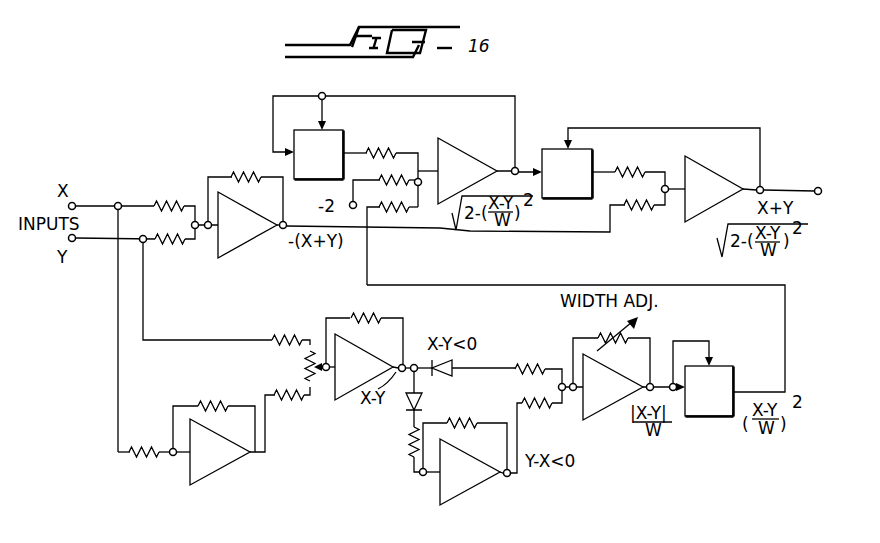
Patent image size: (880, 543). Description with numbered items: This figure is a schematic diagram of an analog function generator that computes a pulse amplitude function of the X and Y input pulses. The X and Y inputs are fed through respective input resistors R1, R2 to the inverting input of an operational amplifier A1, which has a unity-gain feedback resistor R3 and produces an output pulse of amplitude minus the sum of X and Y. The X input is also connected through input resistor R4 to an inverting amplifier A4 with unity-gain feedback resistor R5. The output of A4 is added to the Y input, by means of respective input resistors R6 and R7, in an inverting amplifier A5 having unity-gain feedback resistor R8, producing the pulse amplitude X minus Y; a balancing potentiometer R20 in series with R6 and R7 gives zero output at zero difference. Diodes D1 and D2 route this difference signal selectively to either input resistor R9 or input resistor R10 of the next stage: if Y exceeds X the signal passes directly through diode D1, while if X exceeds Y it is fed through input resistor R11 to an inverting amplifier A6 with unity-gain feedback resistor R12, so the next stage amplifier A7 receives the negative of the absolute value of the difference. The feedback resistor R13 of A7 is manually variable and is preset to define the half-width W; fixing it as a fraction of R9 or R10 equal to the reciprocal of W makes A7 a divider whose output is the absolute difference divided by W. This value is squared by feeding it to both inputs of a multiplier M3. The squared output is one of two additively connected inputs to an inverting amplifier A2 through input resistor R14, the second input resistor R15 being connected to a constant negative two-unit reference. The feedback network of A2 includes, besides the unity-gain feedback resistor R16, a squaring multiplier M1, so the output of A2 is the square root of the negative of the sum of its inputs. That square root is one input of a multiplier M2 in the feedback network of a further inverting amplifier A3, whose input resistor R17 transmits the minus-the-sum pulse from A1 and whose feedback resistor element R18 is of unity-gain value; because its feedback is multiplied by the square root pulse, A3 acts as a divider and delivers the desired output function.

The input resistor R1 is at (174, 201).
The input resistor R2 is at (175, 251).
The unity-gain feedback resistor R3 is at (245, 187).
The operational amplifier A1 is at (247, 225).
The squaring multiplier M1 is at (319, 155).
The unity-gain feedback resistor R16 is at (392, 168).
The second input resistor R15 is at (385, 182).
The input resistor R14 is at (392, 243).
The inverting amplifier A2 is at (467, 171).
The multiplier M2 is at (567, 174).
The resistor element R18 is at (640, 165).
The input resistor R17 is at (644, 217).
The inverting amplifier A3 is at (714, 189).
The input resistor R4 is at (144, 439).
The unity-gain feedback resistor R5 is at (214, 414).
The inverting amplifier A4 is at (220, 452).
The input resistor R6 is at (292, 406).
The input resistor R7 is at (291, 330).
The balancing potentiometer R20 is at (294, 366).
The unity-gain feedback resistor R8 is at (364, 328).
The inverting amplifier A5 is at (364, 367).
The diode D1 is at (467, 379).
The diode D2 is at (425, 400).
The input resistor R9 is at (538, 363).
The input resistor R11 is at (396, 449).
The unity-gain feedback resistor R12 is at (465, 434).
The inverting amplifier A6 is at (470, 472).
The input resistor R10 is at (542, 414).
The feedback resistor R13 is at (611, 349).
The amplifier A7 is at (613, 387).
The multiplier M3 is at (709, 391).